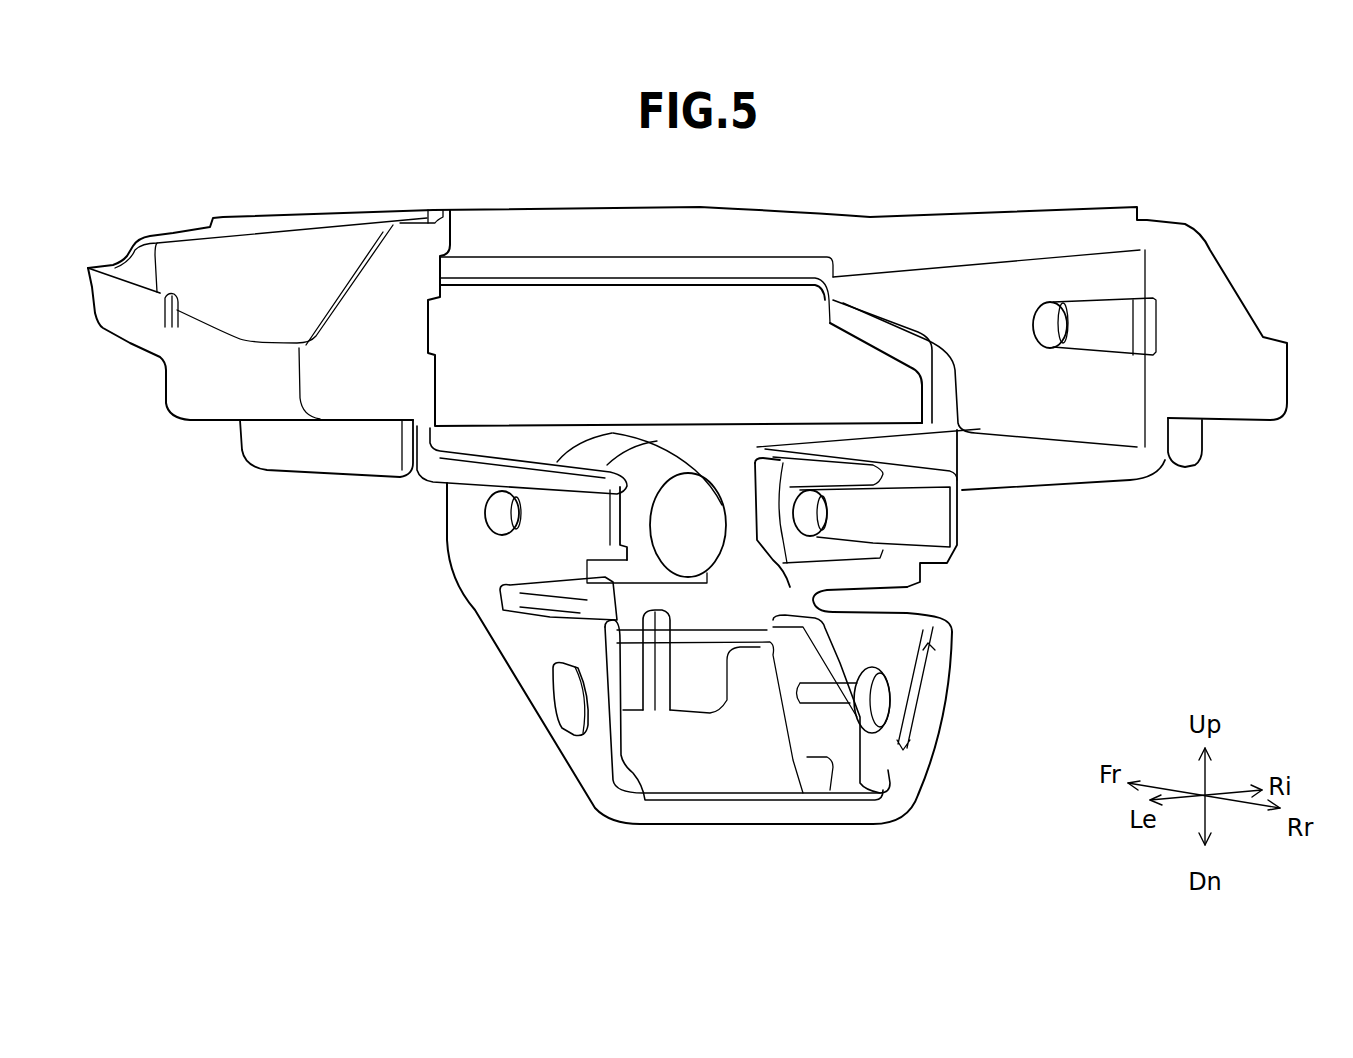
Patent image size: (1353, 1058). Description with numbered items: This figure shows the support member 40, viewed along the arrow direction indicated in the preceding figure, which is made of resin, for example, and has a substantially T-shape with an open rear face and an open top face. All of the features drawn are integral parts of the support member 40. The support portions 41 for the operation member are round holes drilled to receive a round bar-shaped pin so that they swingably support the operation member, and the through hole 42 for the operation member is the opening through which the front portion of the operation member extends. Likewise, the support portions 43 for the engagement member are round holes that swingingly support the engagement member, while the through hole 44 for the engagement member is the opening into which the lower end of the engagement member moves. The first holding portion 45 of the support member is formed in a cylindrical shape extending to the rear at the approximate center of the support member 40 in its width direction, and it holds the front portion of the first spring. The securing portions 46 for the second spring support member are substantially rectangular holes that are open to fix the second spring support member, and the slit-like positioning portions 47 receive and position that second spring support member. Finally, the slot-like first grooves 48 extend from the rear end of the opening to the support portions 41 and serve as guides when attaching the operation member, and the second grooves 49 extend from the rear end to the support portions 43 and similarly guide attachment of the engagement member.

The support member 40 is at (180, 143).
The support portions for the operation member 41 is at (1047, 323).
The through hole for the operation member 42 is at (611, 376).
The support portions for the engagement member 43 is at (495, 512).
The through hole for the engagement member 44 is at (697, 768).
The first holding portion of the support member 45 is at (698, 515).
The securing portions for the second spring support member 46 is at (558, 697).
The positioning portions for the second spring support member 47 is at (553, 613).
The first grooves 48 is at (440, 323).
The second grooves 49 is at (620, 517).